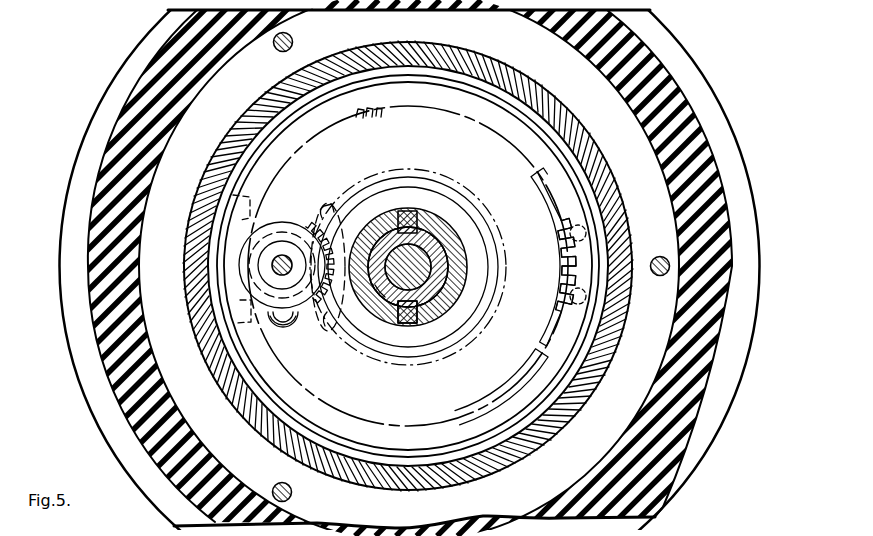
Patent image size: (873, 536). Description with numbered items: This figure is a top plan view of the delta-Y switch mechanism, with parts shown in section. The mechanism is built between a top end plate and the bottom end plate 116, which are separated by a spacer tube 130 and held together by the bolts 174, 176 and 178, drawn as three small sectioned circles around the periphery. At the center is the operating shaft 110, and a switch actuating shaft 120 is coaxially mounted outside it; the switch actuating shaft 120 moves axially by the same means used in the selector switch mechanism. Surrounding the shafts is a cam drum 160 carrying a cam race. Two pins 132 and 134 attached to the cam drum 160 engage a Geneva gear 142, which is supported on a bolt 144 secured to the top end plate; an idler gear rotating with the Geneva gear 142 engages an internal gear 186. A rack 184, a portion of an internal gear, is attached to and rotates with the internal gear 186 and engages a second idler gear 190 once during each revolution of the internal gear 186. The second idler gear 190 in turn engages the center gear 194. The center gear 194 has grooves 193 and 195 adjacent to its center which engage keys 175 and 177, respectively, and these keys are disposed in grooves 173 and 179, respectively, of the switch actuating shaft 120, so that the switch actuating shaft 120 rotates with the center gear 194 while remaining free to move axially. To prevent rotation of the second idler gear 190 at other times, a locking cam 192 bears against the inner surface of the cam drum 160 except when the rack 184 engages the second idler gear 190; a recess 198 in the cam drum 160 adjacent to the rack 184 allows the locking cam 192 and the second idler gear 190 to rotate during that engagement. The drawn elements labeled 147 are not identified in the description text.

The operating shaft 110 is at (432, 272).
The bottom end plate 116 is at (727, 126).
The switch actuating shaft 120 is at (456, 306).
The spacer tube 130 is at (693, 96).
The pin 132 is at (569, 234).
The pin 134 is at (569, 297).
The Geneva gear 142 is at (295, 326).
The bolt 144 is at (283, 255).
The spring 147 is at (237, 195).
The cam drum 160 is at (497, 70).
The groove 173 is at (433, 237).
The bolt 174 is at (655, 276).
The key 175 is at (406, 318).
The bolt 176 is at (293, 42).
The key 177 is at (410, 222).
The bolt 178 is at (276, 483).
The groove 179 is at (384, 308).
The rack 184 is at (560, 271).
The internal gear 186 is at (369, 117).
The second idler gear 190 is at (283, 266).
The locking cam 192 is at (284, 325).
The groove 193 is at (402, 221).
The center gear 194 is at (421, 366).
The groove 195 is at (413, 318).
The recess 198 is at (548, 186).